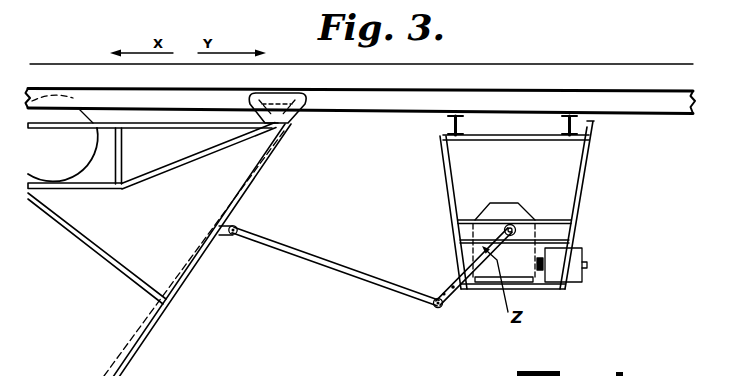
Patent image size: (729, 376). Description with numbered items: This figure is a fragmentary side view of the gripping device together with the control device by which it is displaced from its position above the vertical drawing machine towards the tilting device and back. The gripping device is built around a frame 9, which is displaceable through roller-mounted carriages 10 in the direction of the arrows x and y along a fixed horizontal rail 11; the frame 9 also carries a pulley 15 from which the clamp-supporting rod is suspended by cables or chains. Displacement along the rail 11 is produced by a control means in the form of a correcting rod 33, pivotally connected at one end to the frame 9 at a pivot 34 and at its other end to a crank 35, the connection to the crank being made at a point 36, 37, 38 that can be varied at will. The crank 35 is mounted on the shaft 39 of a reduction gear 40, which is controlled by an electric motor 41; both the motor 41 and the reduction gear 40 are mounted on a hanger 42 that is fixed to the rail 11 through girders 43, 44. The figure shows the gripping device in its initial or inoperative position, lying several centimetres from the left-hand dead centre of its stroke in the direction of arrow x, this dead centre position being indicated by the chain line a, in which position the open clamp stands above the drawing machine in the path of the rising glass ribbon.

The frame 9 is at (199, 257).
The carriage 10 is at (286, 122).
The fixed horizontal rail 11 is at (493, 103).
The pulley 15 is at (55, 140).
The chain line a is at (125, 347).
The correcting rod 33 is at (318, 252).
The pivot point on frame 34 is at (238, 226).
The crank 35 is at (456, 286).
The connection point 36 is at (433, 305).
The connection point 37 is at (442, 292).
The connection point 38 is at (450, 285).
The shaft 39 is at (524, 213).
The reduction gear 40 is at (490, 202).
The electric motor 41 is at (574, 263).
The hanger 42 is at (443, 170).
The girder 43 is at (573, 121).
The girder 44 is at (449, 131).